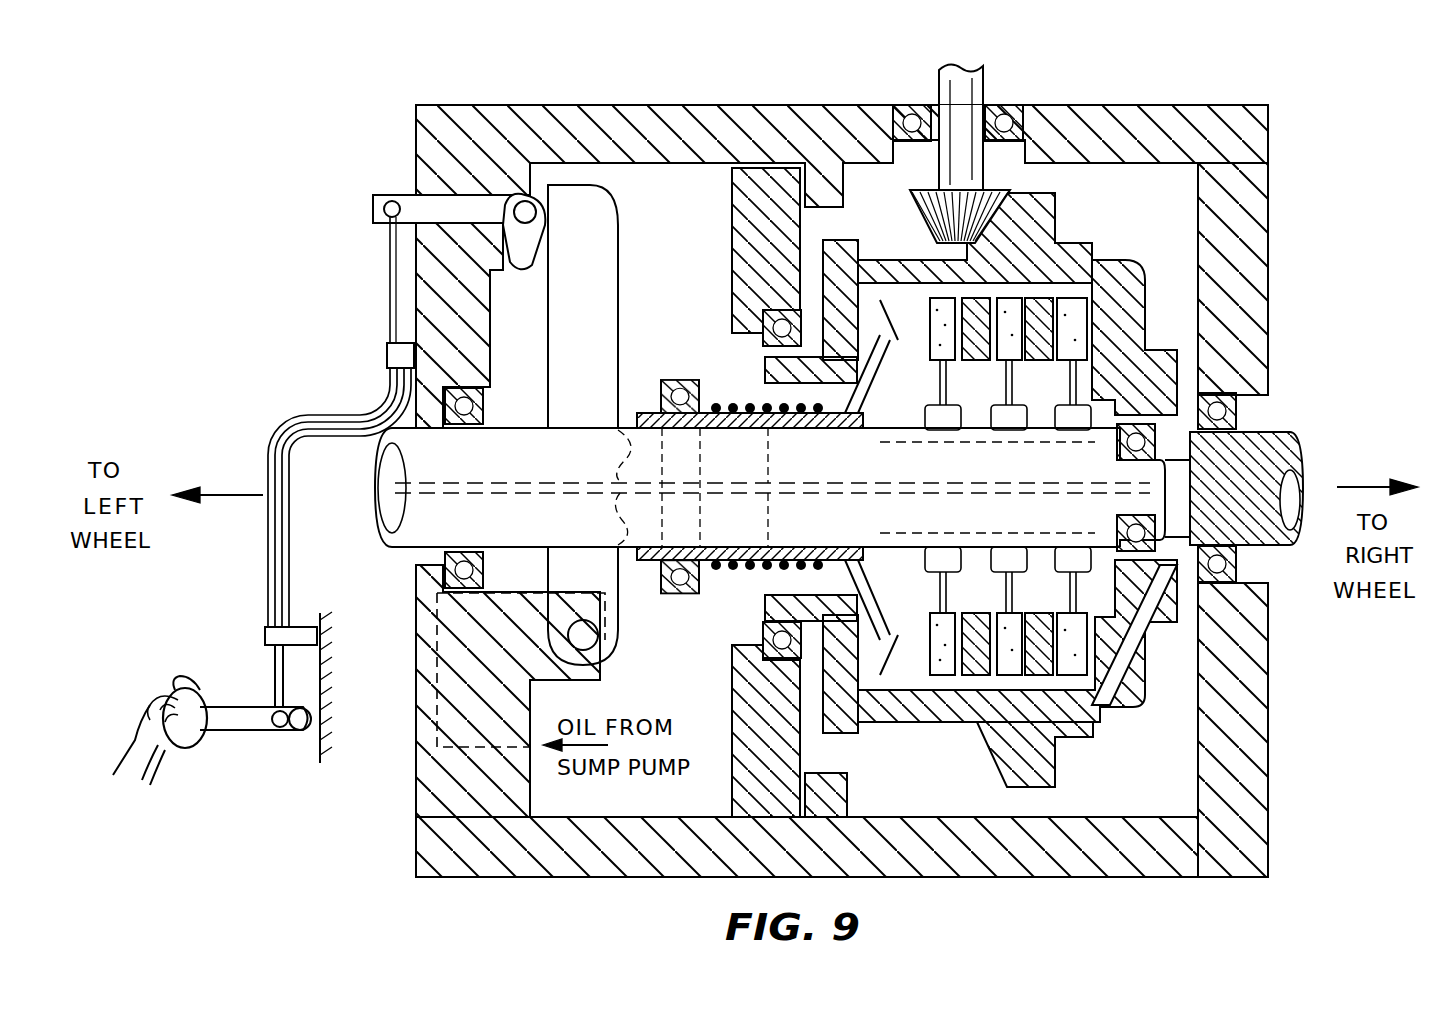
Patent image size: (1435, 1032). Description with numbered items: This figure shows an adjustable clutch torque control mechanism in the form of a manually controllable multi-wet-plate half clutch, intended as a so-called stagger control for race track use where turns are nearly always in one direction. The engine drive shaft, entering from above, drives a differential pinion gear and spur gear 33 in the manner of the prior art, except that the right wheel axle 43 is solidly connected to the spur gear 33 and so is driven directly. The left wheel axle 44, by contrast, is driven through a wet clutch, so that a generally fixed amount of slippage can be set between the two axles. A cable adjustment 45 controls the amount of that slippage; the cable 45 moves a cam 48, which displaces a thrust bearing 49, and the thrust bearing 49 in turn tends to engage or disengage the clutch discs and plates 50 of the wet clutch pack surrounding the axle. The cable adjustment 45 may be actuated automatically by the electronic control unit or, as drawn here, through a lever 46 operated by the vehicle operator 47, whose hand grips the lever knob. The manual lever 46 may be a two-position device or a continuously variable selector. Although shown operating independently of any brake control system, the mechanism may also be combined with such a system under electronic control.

The spur gear 33 is at (1055, 210).
The right wheel axle 43 is at (1280, 432).
The left wheel axle 44 is at (375, 520).
The cable adjustment 45 is at (273, 668).
The lever 46 is at (242, 730).
The vehicle operator 47 is at (145, 705).
The cam 48 is at (520, 205).
The thrust bearing 49 is at (672, 383).
The clutch discs and plates 50 is at (1100, 270).